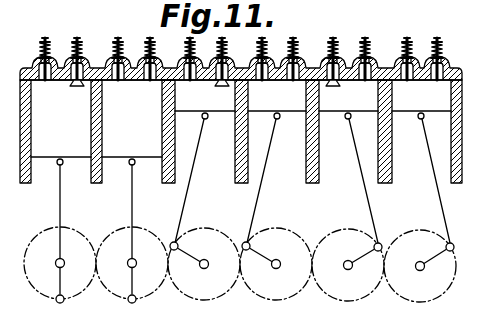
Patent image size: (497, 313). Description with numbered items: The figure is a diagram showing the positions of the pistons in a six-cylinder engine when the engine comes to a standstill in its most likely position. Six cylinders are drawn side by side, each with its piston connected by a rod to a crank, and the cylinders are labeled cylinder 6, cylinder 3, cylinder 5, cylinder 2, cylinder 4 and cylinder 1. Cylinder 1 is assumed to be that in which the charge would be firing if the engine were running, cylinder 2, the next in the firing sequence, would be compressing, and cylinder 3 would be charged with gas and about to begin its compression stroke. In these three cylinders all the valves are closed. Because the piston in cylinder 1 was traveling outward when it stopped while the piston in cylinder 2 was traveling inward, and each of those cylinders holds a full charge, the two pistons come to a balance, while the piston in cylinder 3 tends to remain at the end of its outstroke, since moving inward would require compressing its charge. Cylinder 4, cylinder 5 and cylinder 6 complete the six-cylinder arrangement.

The cylinder 1 is at (420, 170).
The cylinder 2 is at (276, 169).
The cylinder 3 is at (132, 170).
The cylinder 4 is at (348, 169).
The cylinder 5 is at (204, 169).
The cylinder 6 is at (60, 170).